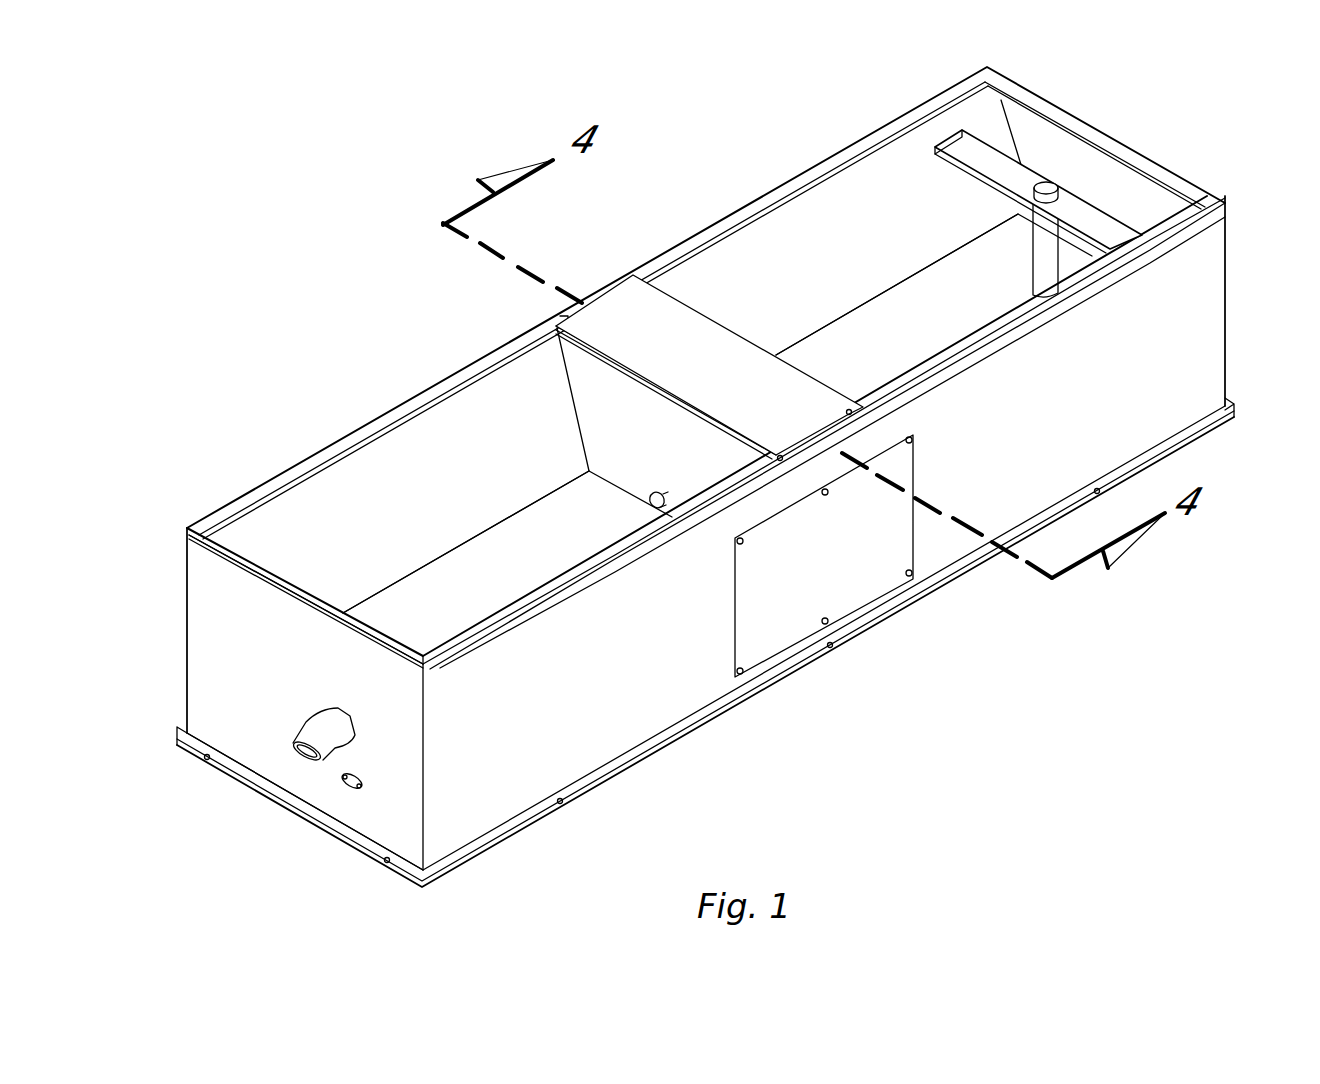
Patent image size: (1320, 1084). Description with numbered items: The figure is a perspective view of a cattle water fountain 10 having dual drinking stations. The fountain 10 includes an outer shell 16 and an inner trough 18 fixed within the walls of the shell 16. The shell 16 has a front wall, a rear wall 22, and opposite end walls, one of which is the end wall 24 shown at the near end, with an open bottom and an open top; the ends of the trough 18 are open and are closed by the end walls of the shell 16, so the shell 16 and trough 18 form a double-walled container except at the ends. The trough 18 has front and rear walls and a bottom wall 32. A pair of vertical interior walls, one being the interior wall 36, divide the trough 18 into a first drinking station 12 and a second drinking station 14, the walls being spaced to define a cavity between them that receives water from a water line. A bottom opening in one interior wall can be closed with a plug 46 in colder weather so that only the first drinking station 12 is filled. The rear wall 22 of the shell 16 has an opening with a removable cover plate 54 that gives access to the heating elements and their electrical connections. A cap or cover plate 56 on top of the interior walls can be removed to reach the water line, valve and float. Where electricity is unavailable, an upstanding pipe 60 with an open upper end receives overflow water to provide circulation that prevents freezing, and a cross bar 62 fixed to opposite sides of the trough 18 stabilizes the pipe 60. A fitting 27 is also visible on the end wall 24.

The cattle water fountain 10 is at (345, 243).
The first drinking station 12 is at (788, 245).
The second drinking station 14 is at (385, 486).
The outer shell 16 is at (1205, 299).
The inner trough 18 is at (440, 430).
The rear wall 22 is at (1162, 403).
The end wall 24 is at (205, 628).
The inlet fitting 27 is at (318, 727).
The bottom wall 32 is at (437, 578).
The vertical interior wall 36 is at (595, 424).
The plug 46 is at (650, 497).
The cover plate 54 is at (890, 545).
The cover plate 56 is at (710, 332).
The upstanding pipe 60 is at (1040, 268).
The cross bar 62 is at (1025, 180).